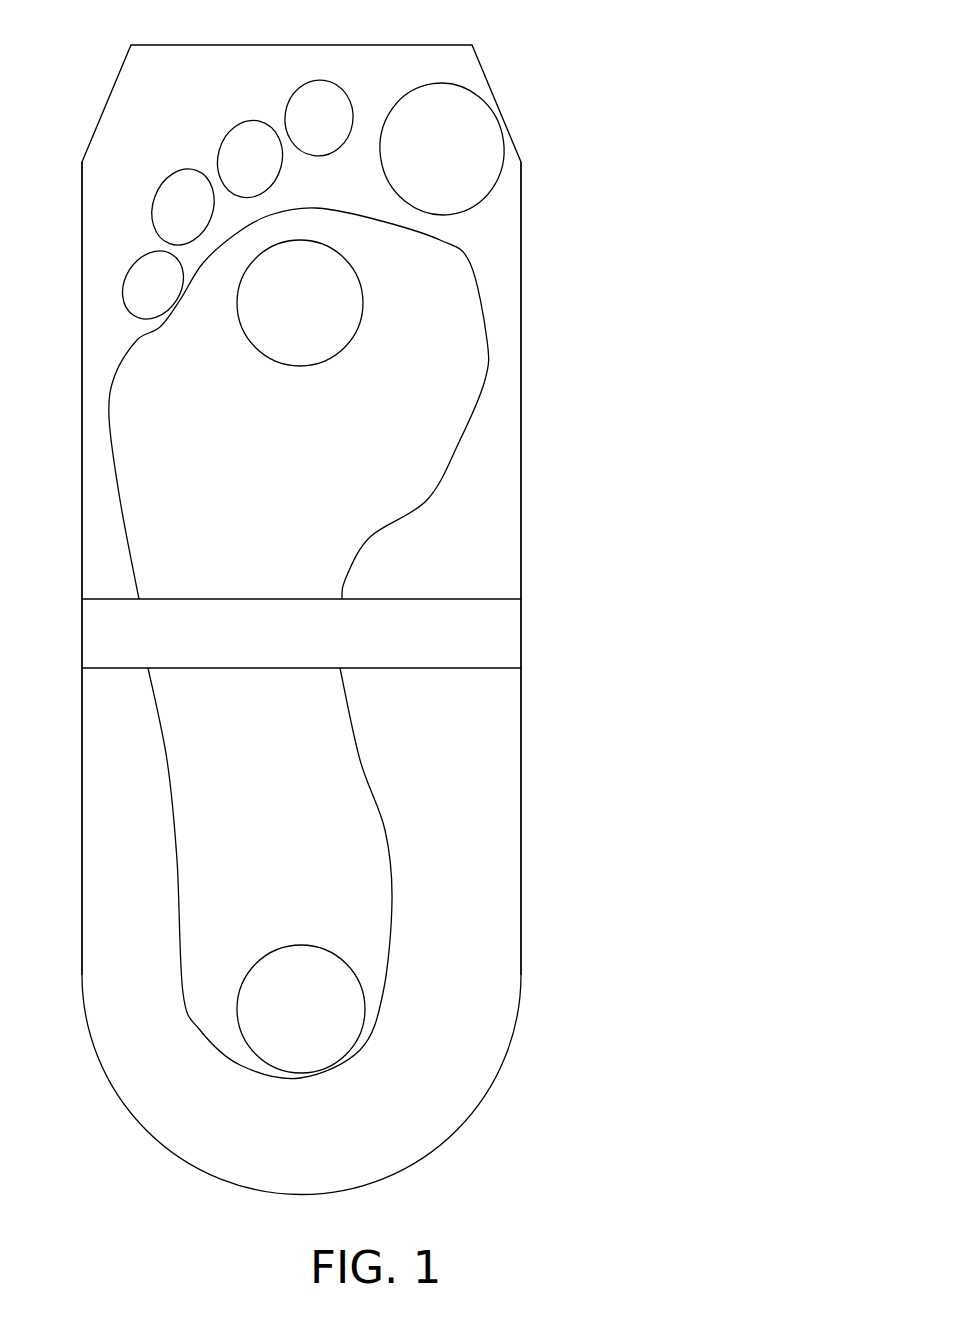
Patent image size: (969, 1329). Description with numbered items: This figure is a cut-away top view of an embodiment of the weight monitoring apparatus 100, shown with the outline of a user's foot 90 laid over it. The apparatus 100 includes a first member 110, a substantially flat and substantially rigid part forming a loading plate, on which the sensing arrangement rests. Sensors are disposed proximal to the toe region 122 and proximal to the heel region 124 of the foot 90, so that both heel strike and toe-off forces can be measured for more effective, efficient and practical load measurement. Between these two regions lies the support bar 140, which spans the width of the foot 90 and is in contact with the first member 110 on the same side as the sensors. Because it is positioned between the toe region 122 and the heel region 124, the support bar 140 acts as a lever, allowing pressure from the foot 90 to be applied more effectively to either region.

The weight monitoring apparatus 100 is at (566, 128).
The first member 110 is at (499, 435).
The support bar 140 is at (483, 645).
The foot 90 is at (320, 778).
The toe region 122 is at (338, 305).
The heel region 124 is at (333, 1023).